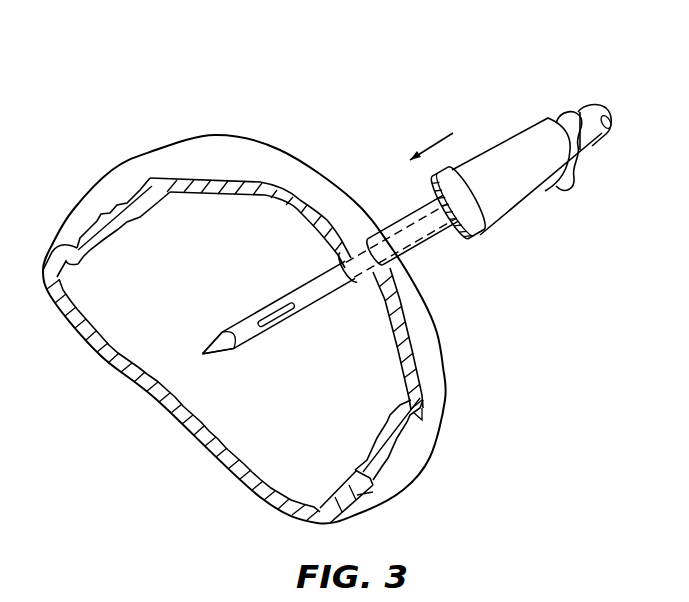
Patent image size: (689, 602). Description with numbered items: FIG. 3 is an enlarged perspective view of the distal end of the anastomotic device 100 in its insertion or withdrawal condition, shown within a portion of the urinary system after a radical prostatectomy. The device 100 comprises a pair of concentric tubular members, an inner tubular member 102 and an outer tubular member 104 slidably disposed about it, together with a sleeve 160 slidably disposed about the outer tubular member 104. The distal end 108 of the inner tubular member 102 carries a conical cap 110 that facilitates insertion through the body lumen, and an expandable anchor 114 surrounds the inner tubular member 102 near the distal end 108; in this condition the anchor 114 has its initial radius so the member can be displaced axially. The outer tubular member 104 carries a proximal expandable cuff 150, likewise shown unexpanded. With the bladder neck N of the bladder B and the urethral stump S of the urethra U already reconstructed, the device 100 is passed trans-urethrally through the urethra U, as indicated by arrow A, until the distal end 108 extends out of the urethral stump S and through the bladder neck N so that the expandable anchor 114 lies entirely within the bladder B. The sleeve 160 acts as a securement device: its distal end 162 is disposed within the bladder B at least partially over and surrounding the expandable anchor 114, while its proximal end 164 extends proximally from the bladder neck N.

The anastomotic device 100 is at (418, 204).
The inner tubular member 102 is at (602, 133).
The outer tubular member 104 is at (573, 120).
The distal end 108 is at (276, 312).
The conical cap 110 is at (216, 347).
The expandable anchor 114 is at (276, 315).
The proximal expandable cuff 150 is at (575, 163).
The sleeve 160 is at (422, 223).
The distal end 162 is at (346, 268).
The proximal end 164 is at (401, 240).
The bladder B is at (268, 156).
The urethral stump S is at (460, 173).
The urethra U is at (528, 130).
The bladder neck N is at (412, 263).
The arrow A is at (431, 141).